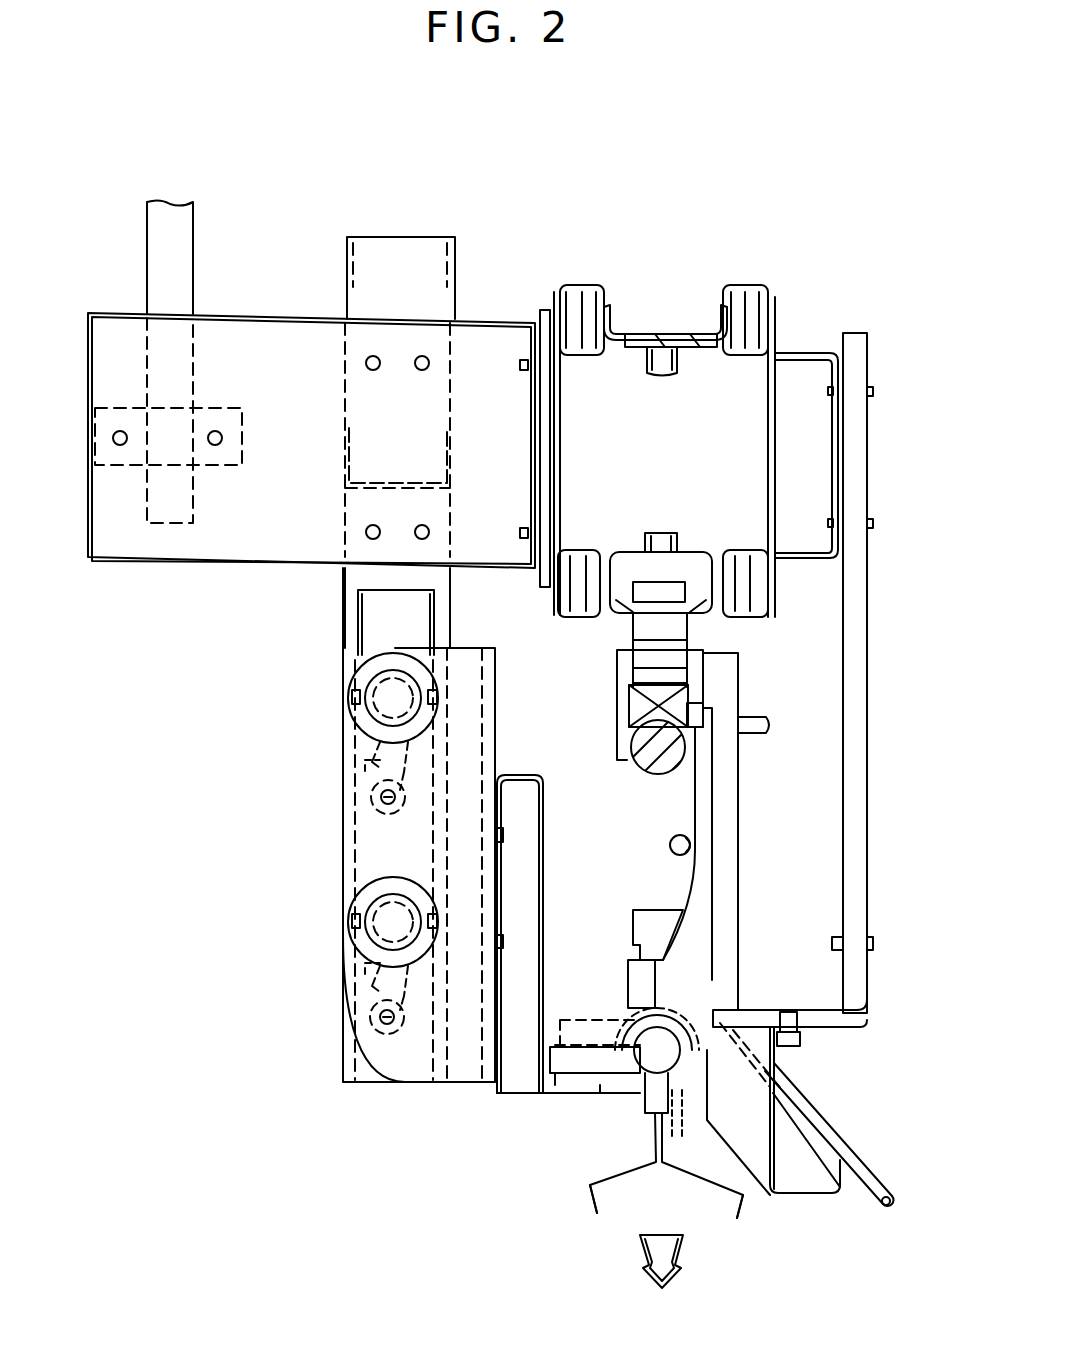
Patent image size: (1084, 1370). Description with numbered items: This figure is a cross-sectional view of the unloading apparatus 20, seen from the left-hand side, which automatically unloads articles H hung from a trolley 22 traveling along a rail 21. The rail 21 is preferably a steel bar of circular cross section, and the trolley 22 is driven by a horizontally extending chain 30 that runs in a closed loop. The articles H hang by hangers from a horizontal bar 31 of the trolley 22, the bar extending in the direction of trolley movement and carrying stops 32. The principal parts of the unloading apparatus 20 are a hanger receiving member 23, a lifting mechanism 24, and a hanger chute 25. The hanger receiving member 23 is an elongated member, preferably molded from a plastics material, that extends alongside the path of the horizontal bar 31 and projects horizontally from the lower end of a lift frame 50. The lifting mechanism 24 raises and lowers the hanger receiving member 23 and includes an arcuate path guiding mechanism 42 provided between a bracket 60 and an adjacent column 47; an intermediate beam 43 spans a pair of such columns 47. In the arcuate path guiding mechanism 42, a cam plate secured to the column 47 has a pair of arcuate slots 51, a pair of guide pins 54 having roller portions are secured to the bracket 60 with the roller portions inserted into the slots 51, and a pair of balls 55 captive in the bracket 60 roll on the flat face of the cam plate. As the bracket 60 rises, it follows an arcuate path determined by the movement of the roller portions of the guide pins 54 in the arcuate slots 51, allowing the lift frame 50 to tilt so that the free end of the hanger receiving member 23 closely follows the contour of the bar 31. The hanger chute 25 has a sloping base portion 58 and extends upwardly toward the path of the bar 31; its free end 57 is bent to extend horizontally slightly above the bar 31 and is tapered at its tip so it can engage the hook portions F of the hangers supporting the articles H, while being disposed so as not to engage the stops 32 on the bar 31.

The unloading apparatus 20 is at (412, 1090).
The rail 21 is at (643, 750).
The trolley 22 is at (750, 692).
The hanger receiving member 23 is at (575, 1013).
The lifting mechanism 24 is at (328, 855).
The hanger chute 25 is at (800, 1087).
The chain 30 is at (660, 525).
The horizontal bar 31 is at (655, 1057).
The stops 32 is at (673, 973).
The arcuate path guiding mechanism 42 is at (373, 743).
The intermediate beam 43 is at (363, 487).
The columns 47 is at (455, 270).
The lift frame 50 is at (542, 867).
The arcuate slots 51 is at (367, 765).
The guide pins 54 is at (373, 795).
The balls 55 is at (340, 701).
The free end 57 is at (747, 1013).
The sloping base portion 58 is at (852, 1150).
The bracket 60 is at (467, 648).
The hook portions F is at (662, 1157).
The articles H is at (592, 1200).